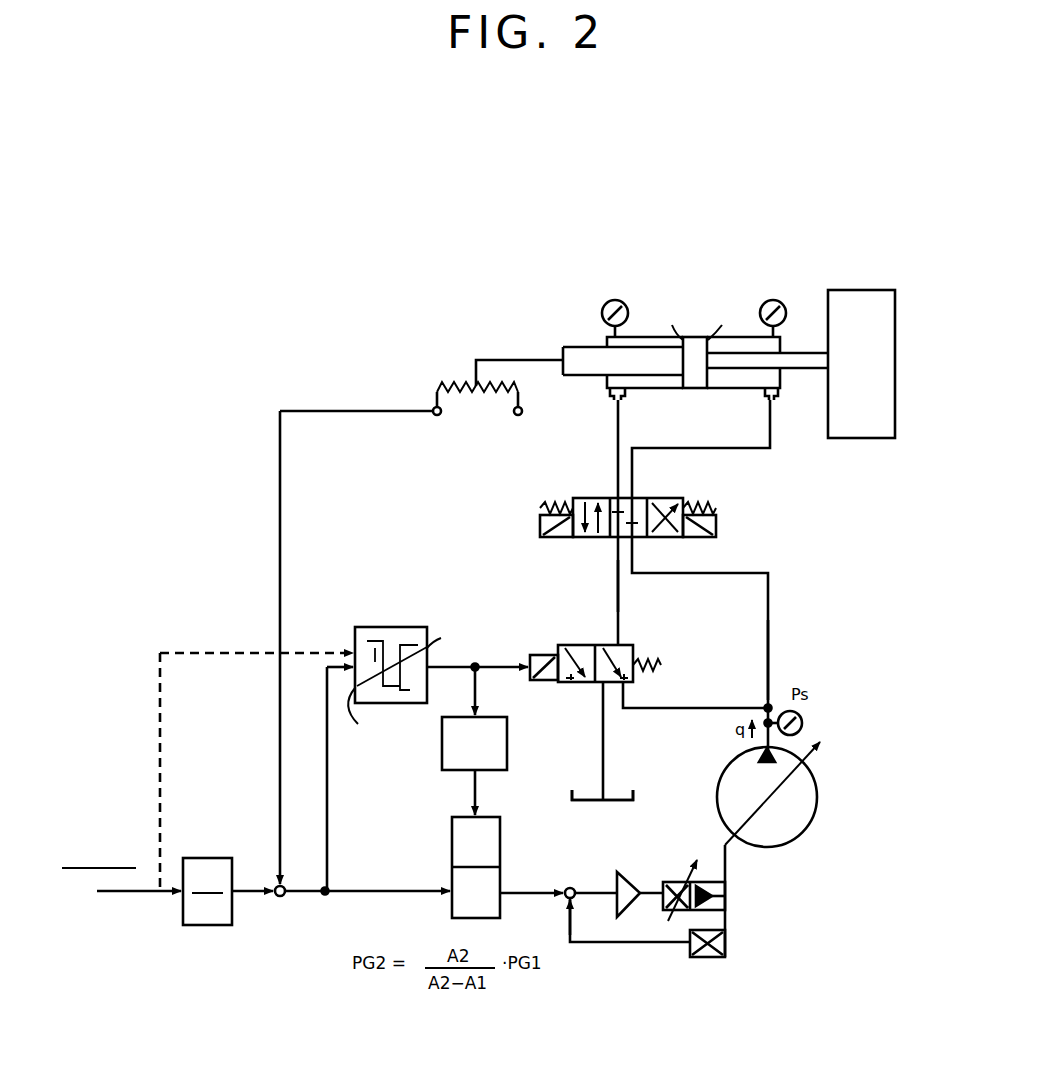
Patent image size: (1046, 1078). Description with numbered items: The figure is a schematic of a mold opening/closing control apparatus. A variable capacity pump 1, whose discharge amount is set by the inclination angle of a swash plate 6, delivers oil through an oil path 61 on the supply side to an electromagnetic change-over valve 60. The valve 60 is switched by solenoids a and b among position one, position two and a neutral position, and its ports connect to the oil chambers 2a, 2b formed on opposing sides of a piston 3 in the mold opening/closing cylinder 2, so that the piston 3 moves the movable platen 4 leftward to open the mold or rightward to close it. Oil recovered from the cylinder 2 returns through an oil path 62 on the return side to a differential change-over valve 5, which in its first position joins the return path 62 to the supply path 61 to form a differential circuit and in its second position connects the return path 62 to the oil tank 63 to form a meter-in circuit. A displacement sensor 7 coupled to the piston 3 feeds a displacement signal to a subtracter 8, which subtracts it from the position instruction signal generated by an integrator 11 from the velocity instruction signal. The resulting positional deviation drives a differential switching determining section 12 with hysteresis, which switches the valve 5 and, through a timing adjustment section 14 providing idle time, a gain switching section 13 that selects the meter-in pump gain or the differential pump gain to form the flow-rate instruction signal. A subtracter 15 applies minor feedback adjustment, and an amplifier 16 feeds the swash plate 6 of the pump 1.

The variable capacity pump 1 is at (798, 843).
The mold opening/closing cylinder 2 is at (695, 280).
The oil chamber 2a is at (640, 337).
The oil chamber 2b is at (750, 337).
The piston 3 is at (695, 340).
The movable platen 4 is at (886, 290).
The differential change-over valve 5 is at (565, 645).
The swash plate 6 is at (728, 915).
The displacement sensor 7 is at (478, 380).
The subtracter 8 is at (286, 888).
The integrator 11 is at (205, 858).
The differential switching determining section 12 is at (357, 628).
The gain switching section 13 is at (455, 818).
The timing adjustment section 14 is at (507, 732).
The subtracter 15 is at (573, 886).
The amplifier 16 is at (624, 877).
The electromagnetic change-over valve 60 is at (538, 510).
The oil path on a supply side 61 is at (770, 657).
The oil path on a return side 62 is at (617, 609).
The oil tank 63 is at (617, 798).